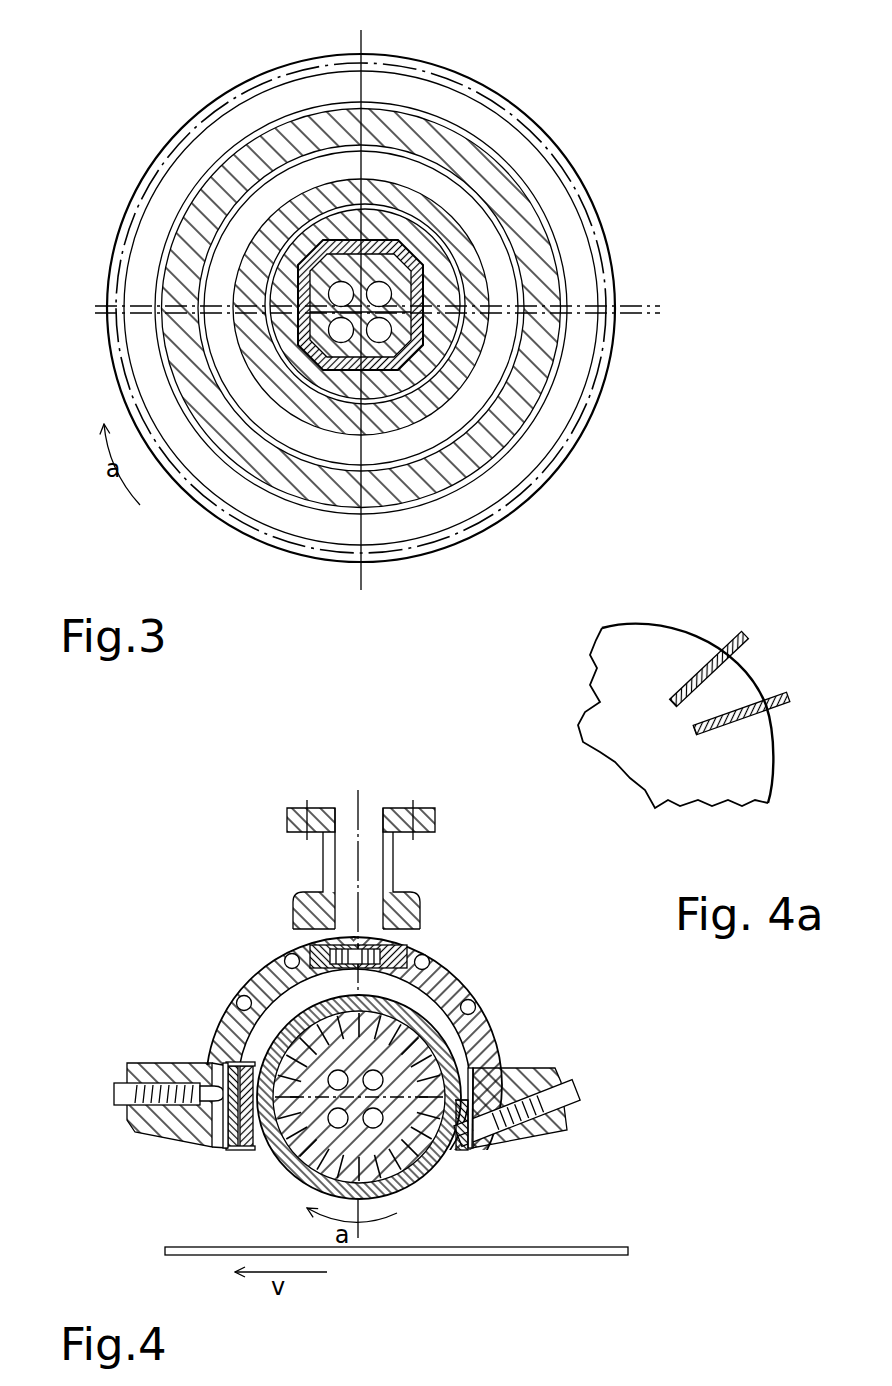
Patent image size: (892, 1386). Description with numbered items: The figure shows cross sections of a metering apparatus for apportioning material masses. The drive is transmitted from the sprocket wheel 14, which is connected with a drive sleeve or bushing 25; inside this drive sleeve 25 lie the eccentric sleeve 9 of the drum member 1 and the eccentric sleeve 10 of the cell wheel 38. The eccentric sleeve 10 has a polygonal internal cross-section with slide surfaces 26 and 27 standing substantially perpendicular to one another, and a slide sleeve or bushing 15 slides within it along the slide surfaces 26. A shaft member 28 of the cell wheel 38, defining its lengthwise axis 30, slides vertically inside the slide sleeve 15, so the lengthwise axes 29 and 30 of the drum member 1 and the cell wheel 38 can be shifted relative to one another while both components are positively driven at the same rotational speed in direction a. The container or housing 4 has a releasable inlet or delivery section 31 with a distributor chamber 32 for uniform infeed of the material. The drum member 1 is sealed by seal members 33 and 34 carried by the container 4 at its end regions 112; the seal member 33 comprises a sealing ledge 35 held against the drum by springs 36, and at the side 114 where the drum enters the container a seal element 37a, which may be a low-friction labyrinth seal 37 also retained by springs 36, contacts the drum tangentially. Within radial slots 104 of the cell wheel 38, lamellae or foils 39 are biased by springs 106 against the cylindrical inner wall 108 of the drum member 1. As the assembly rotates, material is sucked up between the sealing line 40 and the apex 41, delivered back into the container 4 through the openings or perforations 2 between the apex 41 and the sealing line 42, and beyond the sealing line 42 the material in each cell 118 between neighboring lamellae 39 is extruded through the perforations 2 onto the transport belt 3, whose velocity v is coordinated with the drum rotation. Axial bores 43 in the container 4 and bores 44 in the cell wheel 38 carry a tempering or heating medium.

In FIG. 4, the drum member 1 is at (297, 997).
In FIG. 4, the openings or perforations 2 is at (295, 1183).
In FIG. 4, the transport belt or band 3 is at (598, 1258).
In FIG. 4, the container or housing 4 is at (515, 960).
In FIG. 3, the eccentric sleeve of the drum member 9 is at (240, 366).
In FIG. 3, the eccentric sleeve of the cell wheel 10 is at (237, 328).
In FIG. 3, the sprocket wheel 14 is at (180, 126).
In FIG. 3, the slide sleeve or bushing 15 is at (243, 250).
In FIG. 3, the drive sleeve or bushing 25 is at (443, 477).
In FIG. 3, the slide surfaces 26 is at (395, 258).
In FIG. 3, the slide surfaces 27 is at (447, 365).
In FIG. 3, the shaft member 28 is at (440, 243).
In FIG. 3, the lengthwise axis of the drum member 29 is at (300, 240).
In FIG. 4, the lengthwise axis of the drum member 29 is at (498, 1060).
In FIG. 3, the lengthwise axis of the cell wheel 30 is at (345, 378).
In FIG. 4, the lengthwise axis of the cell wheel 30 is at (268, 1150).
In FIG. 4, the inlet or delivery component or section 31 is at (392, 806).
In FIG. 4, the distributor chamber or space 32 is at (370, 925).
In FIG. 4, the sealing or seal member 33 is at (567, 1070).
In FIG. 4, the sealing or seal member 34 is at (105, 1075).
In FIG. 4, the sealing ledge or element 35 is at (458, 1148).
In FIG. 4, the springs or resilient elements 36 is at (157, 1140).
In FIG. 4, the sealing ledge or labyrinth seal 37 is at (240, 1148).
In FIG. 4, the sealing or seal element 37a is at (227, 1147).
In FIG. 4A, the cell wheel 38 is at (625, 640).
In FIG. 4, the cell wheel 38 is at (238, 1055).
In FIG. 4A, the lamellae or foils 39 is at (718, 663).
In FIG. 4, the lamellae or foils 39 is at (282, 1007).
In FIG. 4, the sealing line or edge 40 is at (233, 1053).
In FIG. 4, the apex 41 is at (413, 960).
In FIG. 4, the sealing line or edge 42 is at (473, 1090).
In FIG. 4, the bores 43 is at (477, 1030).
In FIG. 4, the bores 44 is at (380, 1130).
In FIG. 4A, the radial slots or grooves 104 is at (693, 672).
In FIG. 4A, the springs 106 is at (672, 697).
In FIG. 4, the inner wall 108 is at (222, 995).
In FIG. 4, the end regions or ends 112 is at (217, 1057).
In FIG. 4, the side 114 is at (253, 1163).
In FIG. 4, the space or cell 118 is at (318, 1008).